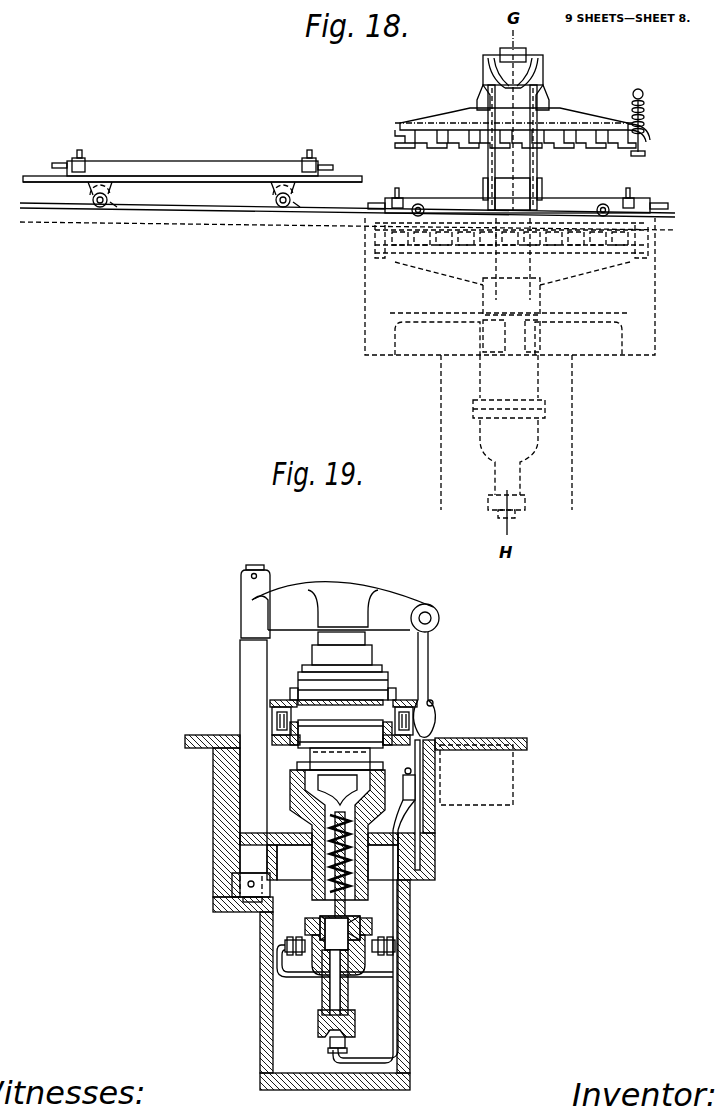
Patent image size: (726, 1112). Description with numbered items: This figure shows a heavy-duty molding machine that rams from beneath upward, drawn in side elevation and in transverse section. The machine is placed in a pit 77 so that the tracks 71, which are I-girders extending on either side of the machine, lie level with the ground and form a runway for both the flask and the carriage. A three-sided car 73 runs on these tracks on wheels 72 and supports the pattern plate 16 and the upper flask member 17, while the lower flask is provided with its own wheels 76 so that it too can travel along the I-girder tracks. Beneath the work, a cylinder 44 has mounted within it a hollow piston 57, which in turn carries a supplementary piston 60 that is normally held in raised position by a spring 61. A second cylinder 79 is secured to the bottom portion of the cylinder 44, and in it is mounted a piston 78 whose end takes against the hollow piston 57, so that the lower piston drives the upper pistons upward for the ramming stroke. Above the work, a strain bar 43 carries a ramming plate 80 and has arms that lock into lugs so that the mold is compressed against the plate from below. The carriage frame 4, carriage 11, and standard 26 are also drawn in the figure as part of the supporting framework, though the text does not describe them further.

In FIG. 18, the carriage frame 4 is at (373, 225).
In FIG. 19, the carriage frame 4 is at (296, 752).
In FIG. 18, the carriage 11 is at (451, 206).
In FIG. 18, the pattern plate 16 is at (258, 178).
In FIG. 19, the pattern plate 16 is at (350, 703).
In FIG. 18, the upper flask member 17 is at (197, 172).
In FIG. 19, the upper flask member 17 is at (383, 692).
In FIG. 19, the standard 26 is at (250, 693).
In FIG. 18, the strain bar 43 is at (539, 73).
In FIG. 19, the strain bar 43 is at (330, 582).
In FIG. 18, the cylinder 44 is at (483, 388).
In FIG. 19, the cylinder 44 is at (315, 904).
In FIG. 19, the hollow piston 57 is at (357, 883).
In FIG. 19, the supplementary piston 60 is at (337, 835).
In FIG. 19, the spring 61 is at (324, 867).
In FIG. 18, the tracks 71 is at (232, 212).
In FIG. 19, the tracks 71 is at (297, 742).
In FIG. 18, the wheels 72 is at (110, 206).
In FIG. 19, the wheels 72 is at (270, 728).
In FIG. 18, the car 73 is at (190, 183).
In FIG. 19, the car 73 is at (277, 698).
In FIG. 18, the wheels 76 is at (418, 203).
In FIG. 19, the wheels 76 is at (279, 736).
In FIG. 18, the pit 77 is at (363, 336).
In FIG. 19, the pit 77 is at (224, 812).
In FIG. 19, the piston 78 is at (336, 995).
In FIG. 18, the cylinder 79 is at (493, 478).
In FIG. 19, the cylinder 79 is at (348, 998).
In FIG. 18, the ramming plate 80 is at (465, 117).
In FIG. 19, the ramming plate 80 is at (342, 652).